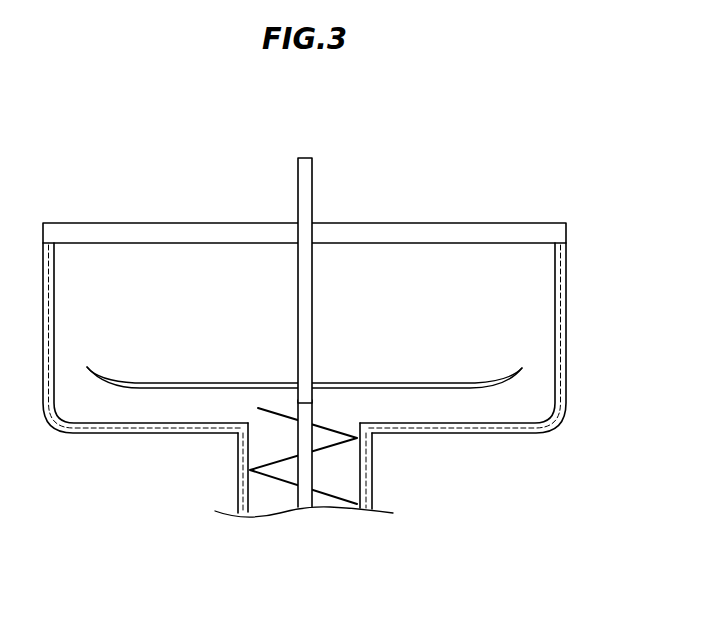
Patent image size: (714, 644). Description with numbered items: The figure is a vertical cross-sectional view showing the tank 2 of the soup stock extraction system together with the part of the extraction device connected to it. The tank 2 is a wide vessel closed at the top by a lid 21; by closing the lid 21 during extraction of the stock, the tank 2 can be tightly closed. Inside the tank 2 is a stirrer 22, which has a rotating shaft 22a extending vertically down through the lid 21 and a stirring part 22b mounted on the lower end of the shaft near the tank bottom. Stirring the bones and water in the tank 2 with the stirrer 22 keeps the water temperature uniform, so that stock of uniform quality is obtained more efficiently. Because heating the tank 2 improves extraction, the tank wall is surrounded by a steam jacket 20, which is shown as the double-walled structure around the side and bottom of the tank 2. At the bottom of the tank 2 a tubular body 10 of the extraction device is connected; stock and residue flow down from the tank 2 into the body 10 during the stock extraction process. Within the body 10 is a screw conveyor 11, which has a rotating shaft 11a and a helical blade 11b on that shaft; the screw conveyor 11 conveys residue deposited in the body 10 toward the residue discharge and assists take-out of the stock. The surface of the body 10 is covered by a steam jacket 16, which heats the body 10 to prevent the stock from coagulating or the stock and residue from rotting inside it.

The tank 2 is at (334, 344).
The steam jacket 20 is at (567, 382).
The lid 21 is at (443, 228).
The stirrer 22 is at (304, 261).
The rotating shaft 22a is at (305, 311).
The stirring part 22b is at (227, 385).
The tubular body 10 is at (312, 470).
The steam jacket 16 is at (238, 473).
The screw conveyor 11 is at (311, 505).
The rotating shaft 11a is at (290, 484).
The helical blade 11b is at (323, 502).